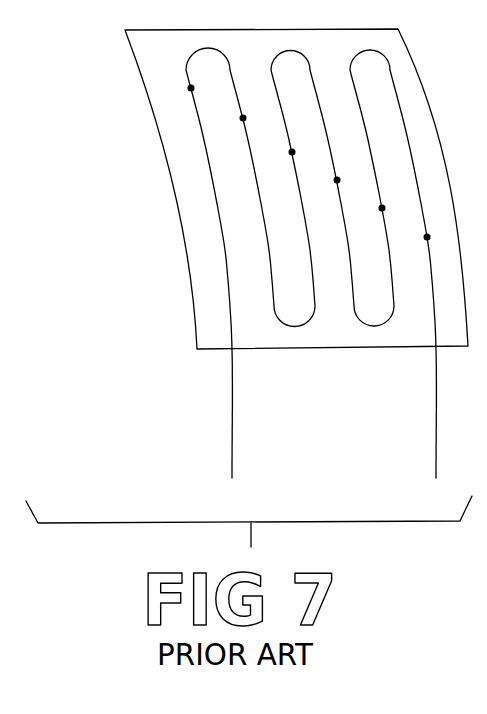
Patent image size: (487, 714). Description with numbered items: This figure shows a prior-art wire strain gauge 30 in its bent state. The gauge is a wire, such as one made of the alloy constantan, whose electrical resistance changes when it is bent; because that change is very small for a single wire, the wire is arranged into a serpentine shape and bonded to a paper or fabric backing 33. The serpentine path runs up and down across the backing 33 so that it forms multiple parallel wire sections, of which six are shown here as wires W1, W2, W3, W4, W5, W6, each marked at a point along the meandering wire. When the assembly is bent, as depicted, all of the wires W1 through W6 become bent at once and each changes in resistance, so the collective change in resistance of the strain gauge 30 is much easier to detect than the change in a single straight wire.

The wire section W1 is at (191, 88).
The wire section W2 is at (243, 118).
The wire section W3 is at (292, 152).
The wire section W4 is at (337, 180).
The wire section W5 is at (382, 208).
The wire section W6 is at (427, 237).
The strain gauge 30 is at (233, 413).
The backing 33 is at (197, 330).